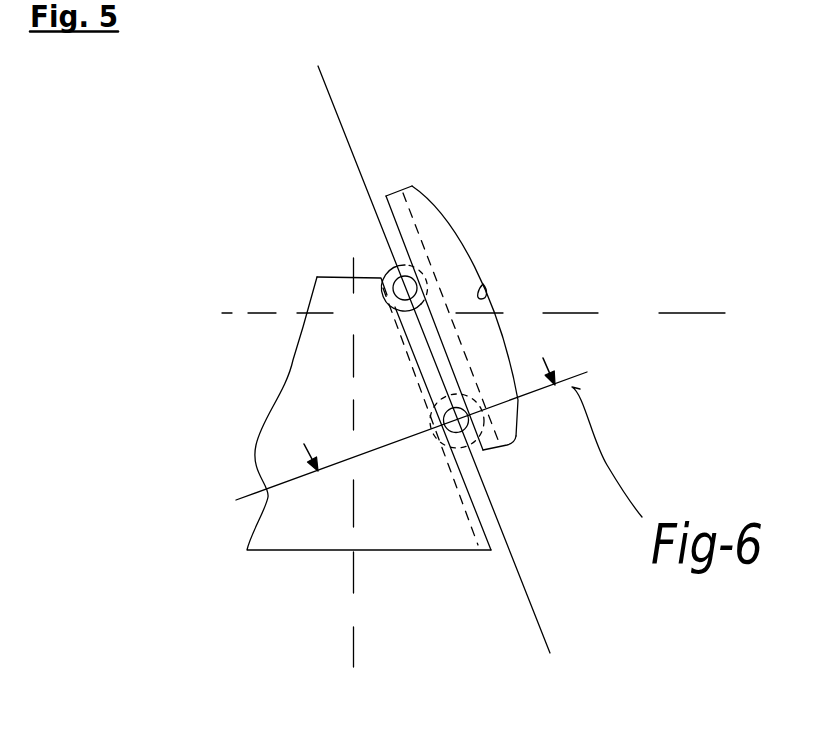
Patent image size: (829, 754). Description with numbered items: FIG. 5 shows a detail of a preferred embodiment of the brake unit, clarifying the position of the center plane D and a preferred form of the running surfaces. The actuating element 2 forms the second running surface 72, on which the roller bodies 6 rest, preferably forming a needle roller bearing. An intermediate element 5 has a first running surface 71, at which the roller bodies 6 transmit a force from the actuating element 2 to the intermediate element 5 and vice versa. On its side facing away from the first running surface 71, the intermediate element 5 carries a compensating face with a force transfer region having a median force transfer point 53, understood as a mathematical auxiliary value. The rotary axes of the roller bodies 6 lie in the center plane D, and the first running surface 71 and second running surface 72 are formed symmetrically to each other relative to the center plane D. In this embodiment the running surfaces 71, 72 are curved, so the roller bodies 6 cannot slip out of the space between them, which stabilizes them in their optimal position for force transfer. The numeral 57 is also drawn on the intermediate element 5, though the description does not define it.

The actuating element 2 is at (404, 534).
The intermediate element 5 is at (430, 223).
The roller bodies 6 is at (457, 416).
The median force transfer point 53 is at (485, 292).
The outer contour surface 57 is at (456, 235).
The first running surface 71 is at (392, 223).
The second running surface 72 is at (470, 521).
The center plane D is at (547, 640).